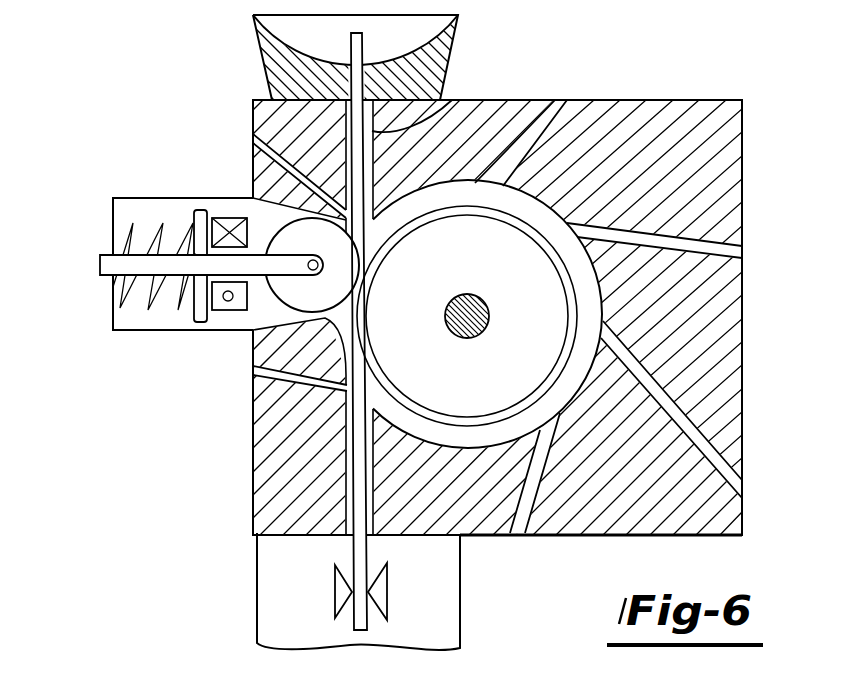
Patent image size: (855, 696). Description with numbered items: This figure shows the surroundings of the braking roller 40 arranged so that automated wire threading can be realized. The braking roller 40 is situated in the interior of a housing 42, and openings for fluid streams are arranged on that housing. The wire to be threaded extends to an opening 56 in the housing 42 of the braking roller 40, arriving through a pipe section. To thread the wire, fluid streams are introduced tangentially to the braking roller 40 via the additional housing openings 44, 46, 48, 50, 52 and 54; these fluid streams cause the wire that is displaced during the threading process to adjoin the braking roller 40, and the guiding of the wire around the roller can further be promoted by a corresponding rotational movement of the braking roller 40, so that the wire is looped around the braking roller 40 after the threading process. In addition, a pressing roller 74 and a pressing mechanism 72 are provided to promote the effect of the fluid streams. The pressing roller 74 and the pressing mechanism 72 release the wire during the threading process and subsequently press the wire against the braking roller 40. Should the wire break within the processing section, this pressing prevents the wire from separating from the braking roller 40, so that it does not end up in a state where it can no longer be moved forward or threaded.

The braking roller 40 is at (492, 268).
The housing 42 is at (703, 174).
The housing opening 44 is at (253, 135).
The housing opening 46 is at (558, 102).
The housing opening 48 is at (742, 252).
The housing opening 50 is at (742, 487).
The housing opening 52 is at (517, 535).
The housing opening 54 is at (257, 372).
The opening 56 is at (448, 102).
The pressing mechanism 72 is at (164, 335).
The pressing roller 74 is at (328, 308).